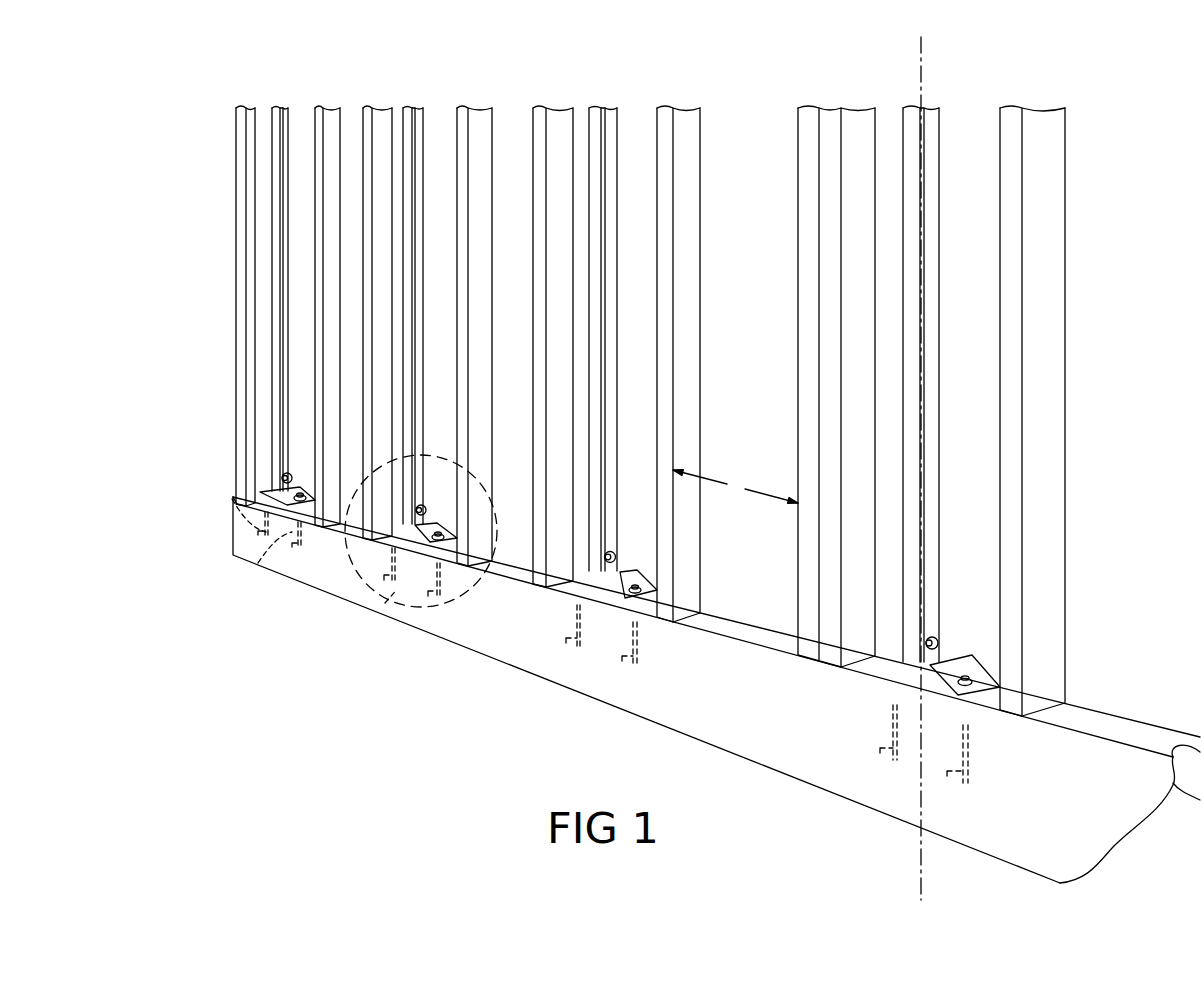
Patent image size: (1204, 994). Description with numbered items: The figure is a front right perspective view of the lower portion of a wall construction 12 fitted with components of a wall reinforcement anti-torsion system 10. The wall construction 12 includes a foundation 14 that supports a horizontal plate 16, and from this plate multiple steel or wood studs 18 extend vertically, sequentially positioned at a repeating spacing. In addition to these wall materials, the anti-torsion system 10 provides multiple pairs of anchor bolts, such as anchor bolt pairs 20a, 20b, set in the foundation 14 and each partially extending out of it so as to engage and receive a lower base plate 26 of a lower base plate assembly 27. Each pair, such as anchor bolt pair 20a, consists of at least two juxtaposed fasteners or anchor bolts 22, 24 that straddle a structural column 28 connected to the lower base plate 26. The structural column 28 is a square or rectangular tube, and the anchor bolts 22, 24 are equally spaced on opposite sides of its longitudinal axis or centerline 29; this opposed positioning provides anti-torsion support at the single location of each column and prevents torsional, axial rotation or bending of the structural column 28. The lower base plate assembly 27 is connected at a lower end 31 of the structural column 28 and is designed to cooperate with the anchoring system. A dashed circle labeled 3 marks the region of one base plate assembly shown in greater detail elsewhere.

The wall reinforcement anti-torsion system 10 is at (690, 468).
The wall construction 12 is at (655, 386).
The foundation 14 is at (716, 690).
The horizontal plate 16 is at (718, 615).
The studs 18 is at (685, 557).
The anchor bolt pair 20a is at (262, 537).
The anchor bolt pair 20b is at (385, 603).
The anchor bolt 22 is at (232, 499).
The anchor bolt 24 is at (258, 563).
The lower base plate 26 is at (593, 598).
The lower base plate assembly 27 is at (624, 597).
The structural column 28 is at (278, 264).
The longitudinal axis 29 is at (918, 860).
The lower end 31 is at (284, 483).
The detail area of FIG. 3 is at (358, 596).